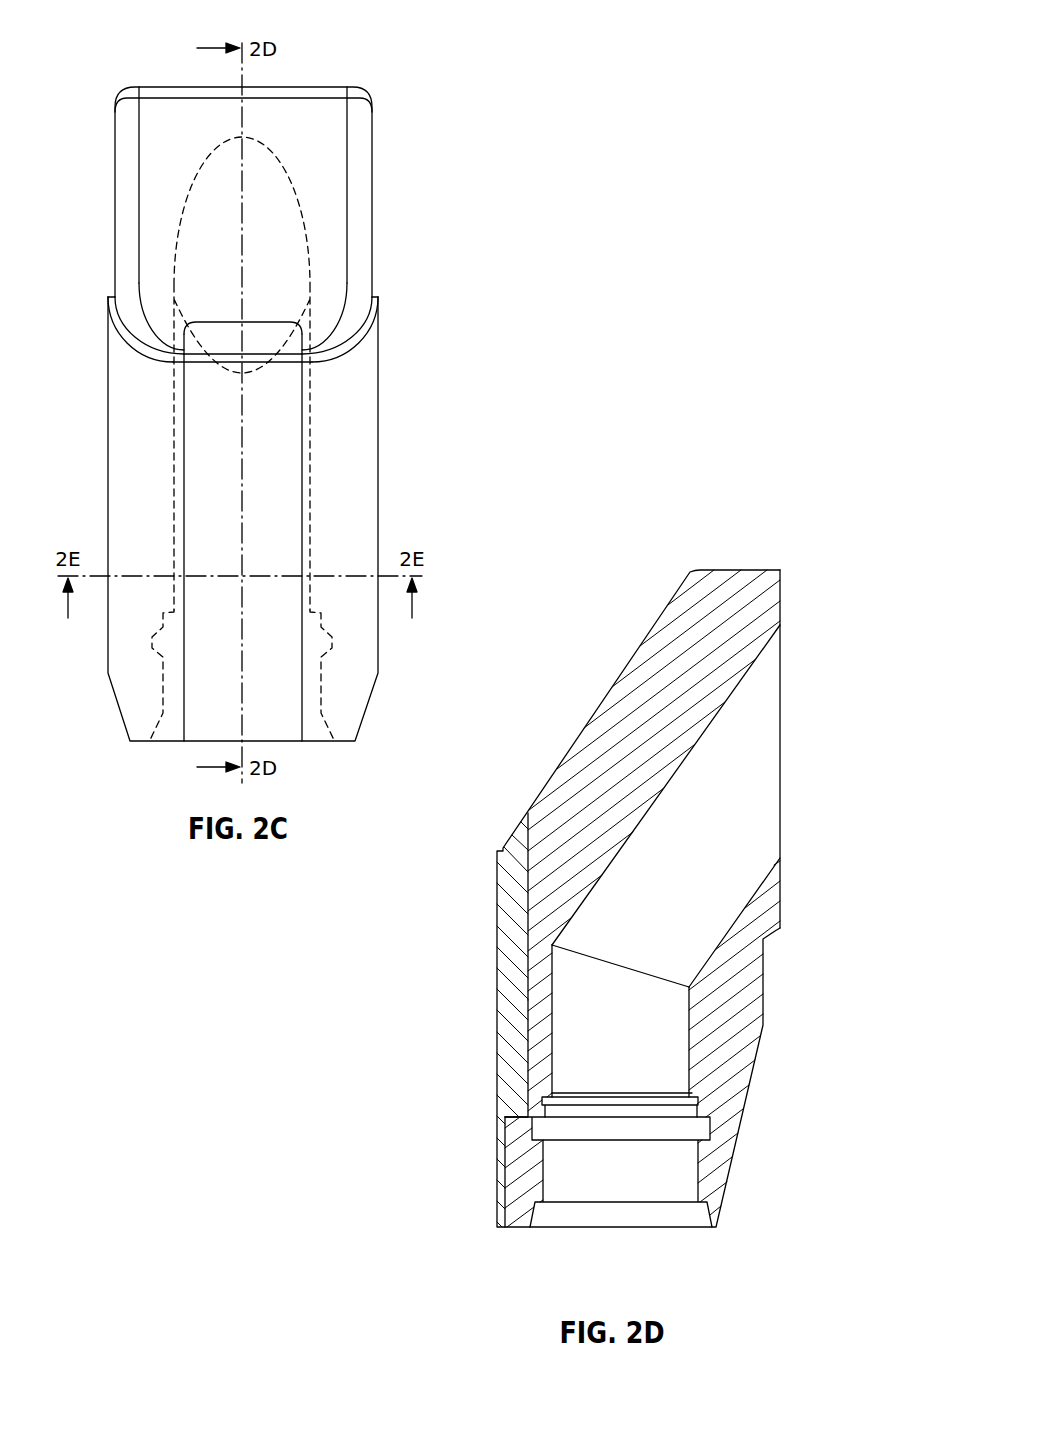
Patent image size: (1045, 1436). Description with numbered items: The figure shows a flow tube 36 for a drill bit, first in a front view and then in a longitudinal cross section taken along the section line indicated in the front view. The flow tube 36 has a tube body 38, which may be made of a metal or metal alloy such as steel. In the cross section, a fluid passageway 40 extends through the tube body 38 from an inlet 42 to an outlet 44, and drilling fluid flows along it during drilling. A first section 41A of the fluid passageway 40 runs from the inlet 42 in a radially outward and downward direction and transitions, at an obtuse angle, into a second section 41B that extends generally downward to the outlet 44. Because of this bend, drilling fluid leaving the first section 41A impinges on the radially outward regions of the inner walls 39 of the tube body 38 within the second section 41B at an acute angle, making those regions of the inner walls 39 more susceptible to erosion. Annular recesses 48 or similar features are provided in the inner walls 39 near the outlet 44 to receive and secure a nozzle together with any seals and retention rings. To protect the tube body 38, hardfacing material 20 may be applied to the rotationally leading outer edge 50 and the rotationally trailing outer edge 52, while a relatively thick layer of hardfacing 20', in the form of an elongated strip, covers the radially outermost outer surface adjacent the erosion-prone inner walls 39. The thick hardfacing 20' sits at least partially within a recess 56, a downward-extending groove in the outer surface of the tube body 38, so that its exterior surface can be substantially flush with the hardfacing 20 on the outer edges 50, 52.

In FIG. 2C, the flow tube 36 is at (444, 153).
In FIG. 2D, the flow tube 36 is at (613, 583).
In FIG. 2C, the tube body 38 is at (328, 253).
In FIG. 2D, the tube body 38 is at (625, 728).
In FIG. 2C, the rotationally leading outer edge 50 is at (147, 330).
In FIG. 2C, the rotationally trailing outer edge 52 is at (337, 325).
In FIG. 2C, the recess 56 is at (252, 322).
In FIG. 2D, the recess 56 is at (522, 882).
In FIG. 2C, the relatively thick layer of hardfacing 20' is at (167, 373).
In FIG. 2D, the relatively thick layer of hardfacing 20' is at (462, 906).
In FIG. 2C, the hardfacing material 20 is at (243, 519).
In FIG. 2D, the inlet 42 is at (795, 757).
In FIG. 2D, the first section of the fluid passageway 41A is at (723, 810).
In FIG. 2D, the fluid passageway 40 is at (659, 899).
In FIG. 2D, the inner walls 39 is at (738, 893).
In FIG. 2D, the second section of the fluid passageway 41B is at (592, 1053).
In FIG. 2D, the outlet 44 is at (567, 1237).
In FIG. 2D, the annular recesses 48 is at (704, 1131).